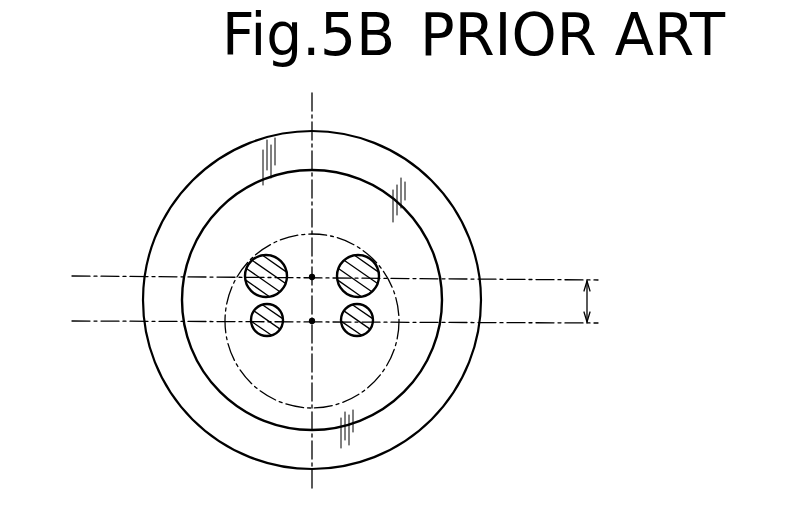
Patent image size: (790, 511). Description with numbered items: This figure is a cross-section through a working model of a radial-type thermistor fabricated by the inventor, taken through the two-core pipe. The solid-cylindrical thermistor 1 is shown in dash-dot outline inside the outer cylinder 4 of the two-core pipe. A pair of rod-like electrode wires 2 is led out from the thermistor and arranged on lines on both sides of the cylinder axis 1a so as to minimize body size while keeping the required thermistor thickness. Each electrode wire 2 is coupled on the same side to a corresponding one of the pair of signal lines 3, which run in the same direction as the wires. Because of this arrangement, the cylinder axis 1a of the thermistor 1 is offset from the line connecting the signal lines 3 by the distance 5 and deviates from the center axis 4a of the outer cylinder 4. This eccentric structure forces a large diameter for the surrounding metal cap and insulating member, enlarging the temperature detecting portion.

The solid-cylindrical thermistor 1 is at (290, 237).
The cylinder axis 1a is at (312, 321).
The electrode wires 2 is at (266, 326).
The signal lines 3 is at (270, 285).
The outer cylinder 4 is at (160, 373).
The center axis 4a is at (312, 277).
The distance 5 is at (600, 303).